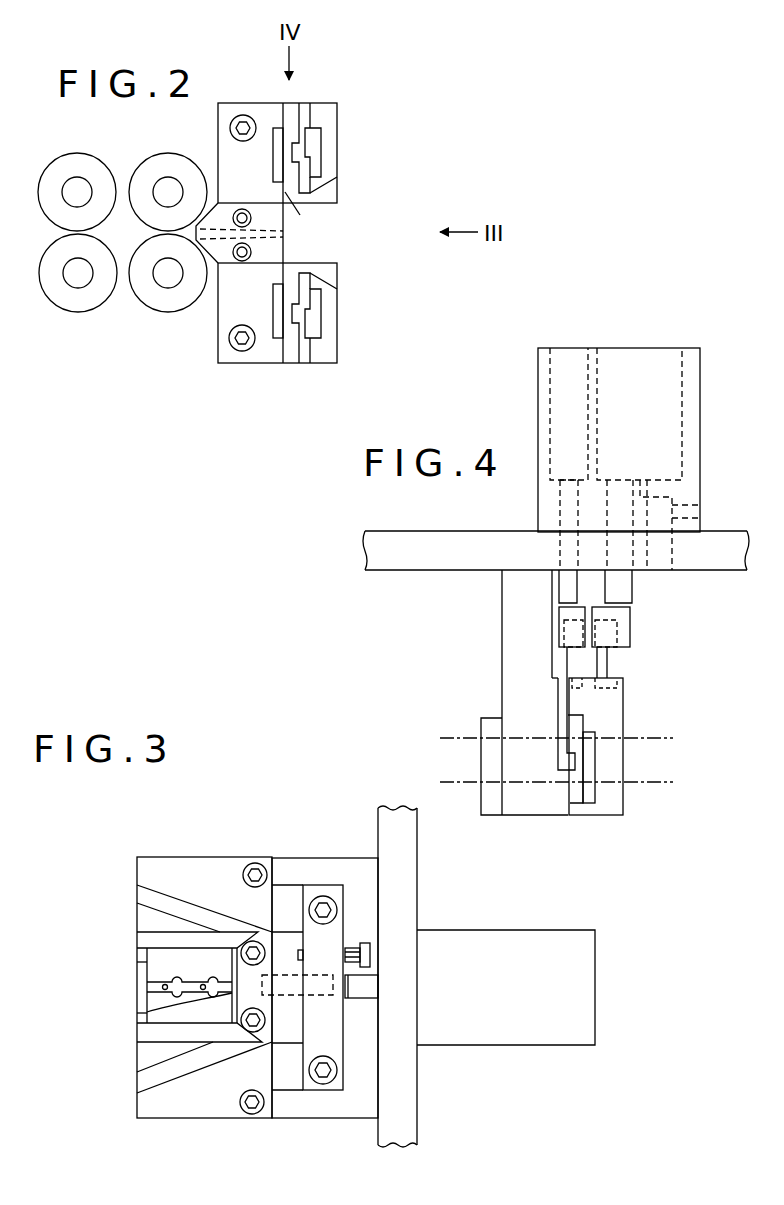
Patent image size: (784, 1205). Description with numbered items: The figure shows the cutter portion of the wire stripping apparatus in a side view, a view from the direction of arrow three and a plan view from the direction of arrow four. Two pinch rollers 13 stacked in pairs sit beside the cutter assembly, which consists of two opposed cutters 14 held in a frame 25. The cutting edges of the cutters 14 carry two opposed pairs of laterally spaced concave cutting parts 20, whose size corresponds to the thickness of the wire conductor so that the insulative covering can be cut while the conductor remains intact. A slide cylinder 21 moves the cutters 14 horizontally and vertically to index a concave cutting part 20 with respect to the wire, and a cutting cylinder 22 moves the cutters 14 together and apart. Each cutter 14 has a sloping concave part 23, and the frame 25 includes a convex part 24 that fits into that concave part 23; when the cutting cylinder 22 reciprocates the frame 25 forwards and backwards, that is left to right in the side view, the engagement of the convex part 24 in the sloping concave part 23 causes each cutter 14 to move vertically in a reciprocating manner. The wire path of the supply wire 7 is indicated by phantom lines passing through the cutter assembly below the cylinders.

In FIG. 4, the supply wire 7 is at (445, 738).
In FIG. 2, the pinch rollers 13 is at (160, 311).
In FIG. 2, the cutters 14 is at (283, 203).
In FIG. 4, the cutters 14 is at (573, 808).
In FIG. 3, the cutters 14 is at (135, 966).
In FIG. 3, the concave cutting parts 20 is at (213, 998).
In FIG. 4, the slide cylinder 21 is at (580, 360).
In FIG. 4, the cutting cylinder 22 is at (655, 360).
In FIG. 3, the cutting cylinder 22 is at (495, 1045).
In FIG. 2, the sloping concave part 23 is at (285, 318).
In FIG. 3, the sloping concave part 23 is at (168, 902).
In FIG. 2, the convex part 24 is at (290, 317).
In FIG. 3, the convex part 24 is at (168, 902).
In FIG. 2, the frame 25 is at (303, 350).
In FIG. 4, the frame 25 is at (613, 702).
In FIG. 3, the frame 25 is at (190, 1118).